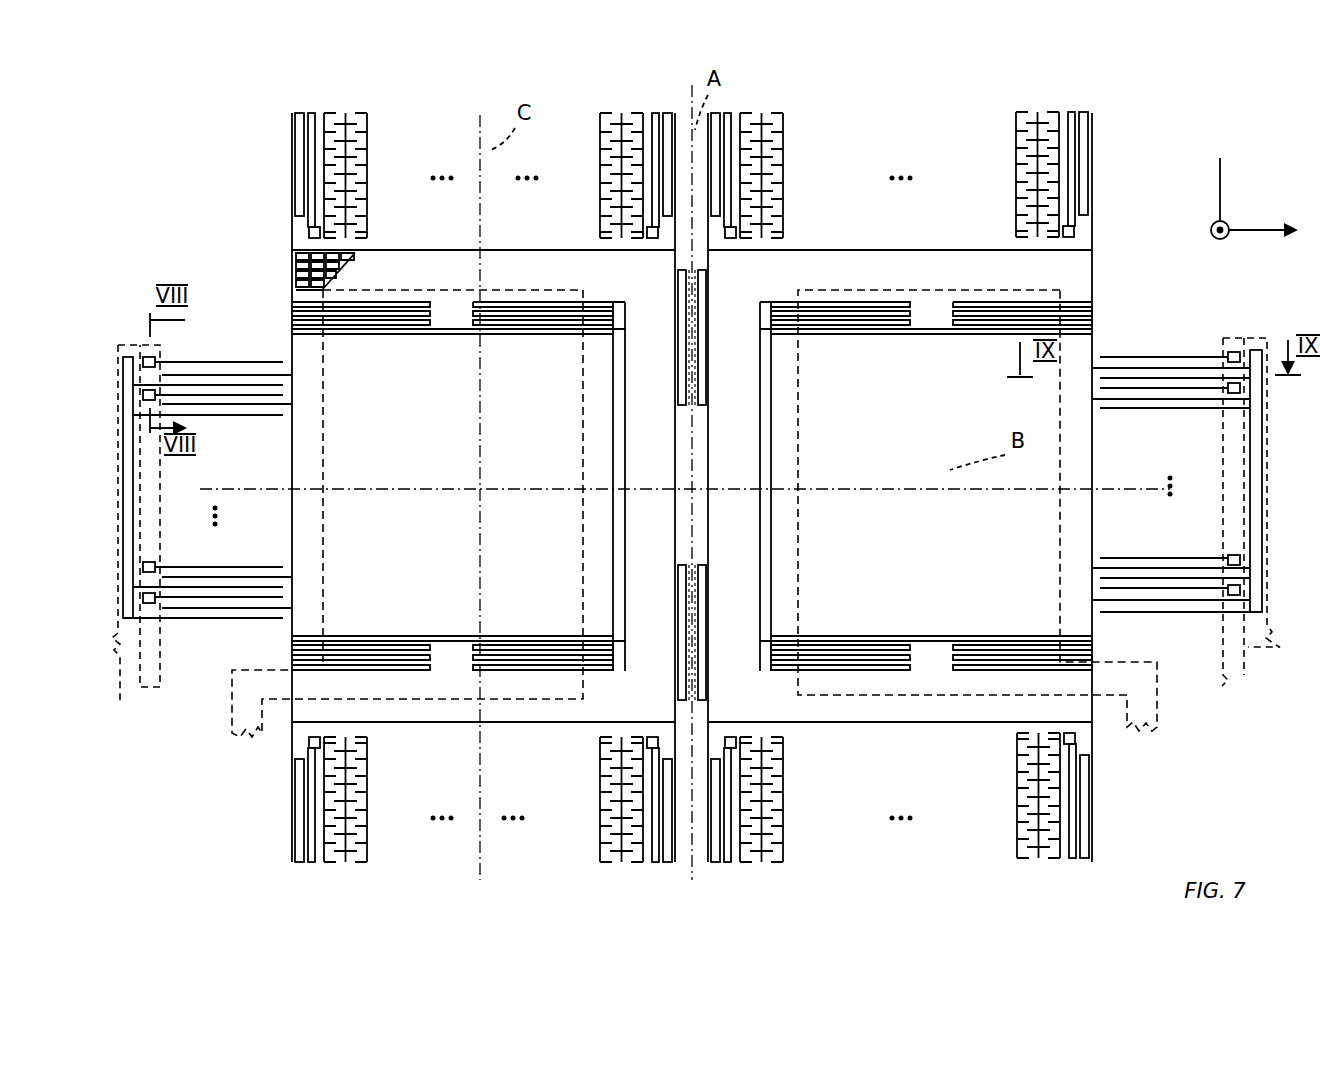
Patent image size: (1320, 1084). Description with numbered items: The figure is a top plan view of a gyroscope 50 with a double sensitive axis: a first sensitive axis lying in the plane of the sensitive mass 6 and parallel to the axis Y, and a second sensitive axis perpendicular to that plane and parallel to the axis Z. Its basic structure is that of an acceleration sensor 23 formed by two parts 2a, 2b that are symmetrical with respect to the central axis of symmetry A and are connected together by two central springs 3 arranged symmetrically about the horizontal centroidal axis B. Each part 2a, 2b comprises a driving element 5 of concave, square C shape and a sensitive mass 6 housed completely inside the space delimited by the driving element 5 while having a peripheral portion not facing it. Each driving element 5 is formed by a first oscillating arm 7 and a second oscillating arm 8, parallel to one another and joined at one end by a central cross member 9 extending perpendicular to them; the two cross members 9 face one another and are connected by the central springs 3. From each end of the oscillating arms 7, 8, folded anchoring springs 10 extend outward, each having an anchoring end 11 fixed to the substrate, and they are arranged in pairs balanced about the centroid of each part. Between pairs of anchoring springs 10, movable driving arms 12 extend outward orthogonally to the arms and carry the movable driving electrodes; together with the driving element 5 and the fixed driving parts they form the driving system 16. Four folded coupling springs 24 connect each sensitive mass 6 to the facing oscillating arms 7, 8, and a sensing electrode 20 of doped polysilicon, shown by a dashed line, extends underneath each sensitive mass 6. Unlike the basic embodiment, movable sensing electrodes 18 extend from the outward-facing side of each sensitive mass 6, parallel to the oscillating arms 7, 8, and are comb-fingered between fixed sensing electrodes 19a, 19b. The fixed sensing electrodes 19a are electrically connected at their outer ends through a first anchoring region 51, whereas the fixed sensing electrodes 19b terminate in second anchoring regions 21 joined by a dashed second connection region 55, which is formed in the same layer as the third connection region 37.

The part 2a is at (238, 772).
The part 2b is at (1178, 704).
The central spring 3 is at (708, 310).
The driving element 5 is at (444, 722).
The sensitive mass 6 is at (692, 486).
The first oscillating arm 7 is at (441, 250).
The second oscillating arm 8 is at (563, 722).
The central cross member 9 is at (692, 487).
The anchoring spring 10 is at (298, 146).
The anchoring end 11 is at (307, 235).
The movable driving arm 12 is at (345, 120).
The driving system 16 is at (555, 768).
The movable sensing electrode 18 is at (245, 365).
The fixed sensing electrode 19a is at (215, 404).
The fixed sensing electrode 19b is at (212, 416).
The sensing electrode 20 is at (505, 292).
The second anchoring region 21 is at (143, 394).
The acceleration sensor 23 is at (215, 292).
The coupling spring 24 is at (400, 318).
The third connection region 37 is at (118, 660).
The gyroscope 50 is at (1180, 178).
The first anchoring region 51 is at (123, 470).
The second connection region 55 is at (118, 655).